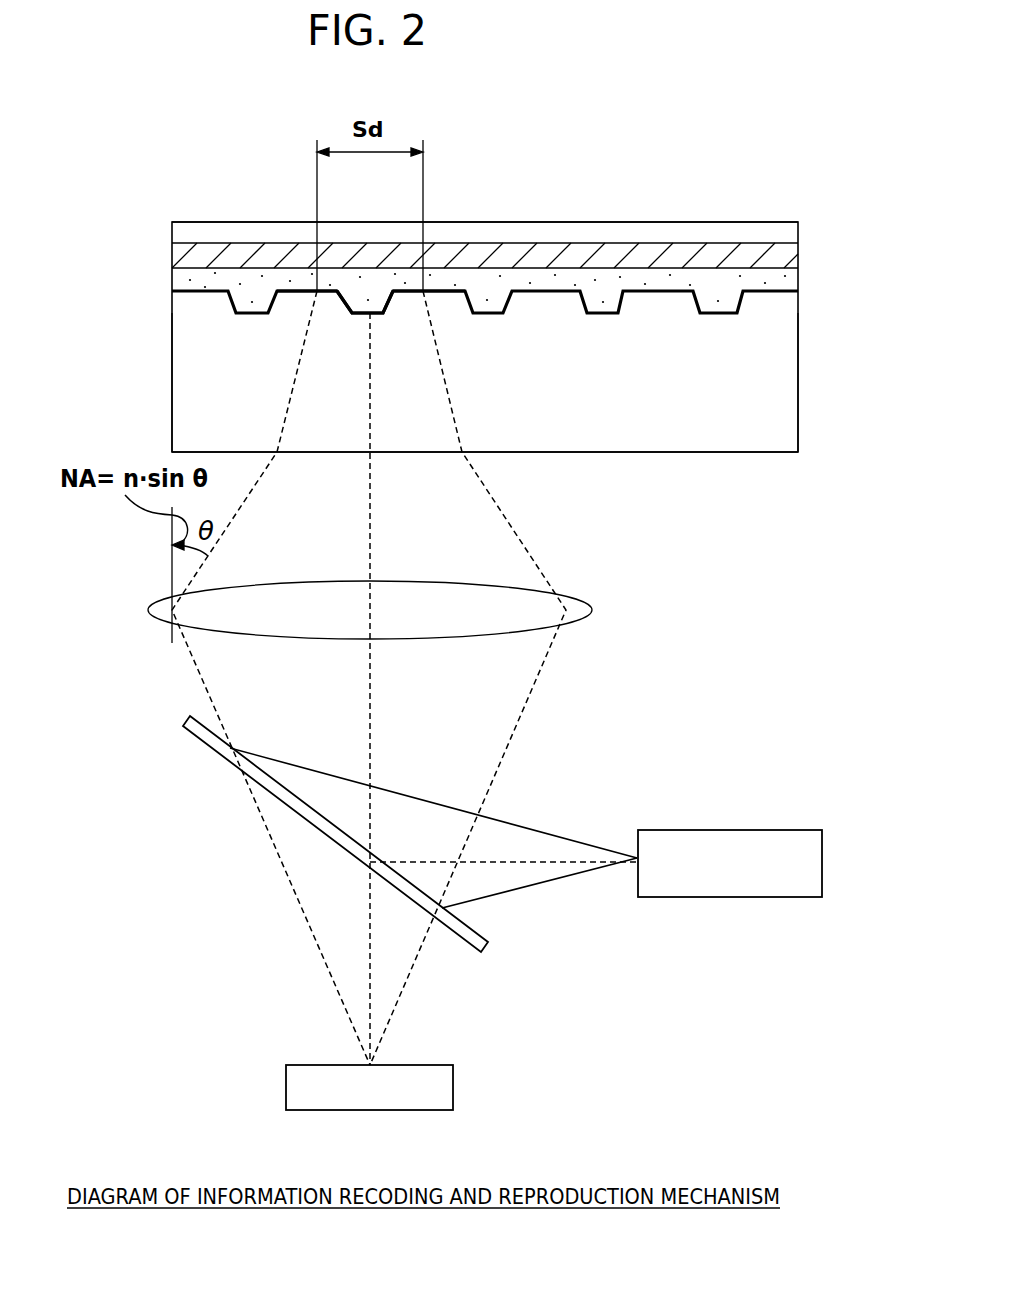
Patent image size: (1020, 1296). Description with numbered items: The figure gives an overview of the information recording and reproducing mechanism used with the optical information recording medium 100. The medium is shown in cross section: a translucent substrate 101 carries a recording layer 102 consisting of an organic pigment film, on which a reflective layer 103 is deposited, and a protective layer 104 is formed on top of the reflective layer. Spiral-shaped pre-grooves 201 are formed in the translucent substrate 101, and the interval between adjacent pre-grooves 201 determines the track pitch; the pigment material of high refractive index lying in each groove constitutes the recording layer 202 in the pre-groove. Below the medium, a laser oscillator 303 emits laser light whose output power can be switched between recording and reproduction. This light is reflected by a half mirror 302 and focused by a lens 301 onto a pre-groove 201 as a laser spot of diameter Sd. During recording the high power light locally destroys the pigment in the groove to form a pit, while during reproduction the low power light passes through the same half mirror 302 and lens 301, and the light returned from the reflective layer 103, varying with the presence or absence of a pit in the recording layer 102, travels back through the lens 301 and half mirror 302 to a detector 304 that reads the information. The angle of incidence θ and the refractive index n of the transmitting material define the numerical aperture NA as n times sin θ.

The optical information recording medium 100 is at (528, 175).
The translucent substrate 101 is at (645, 392).
The recording layer 102 is at (550, 274).
The reflective layer 103 is at (654, 250).
The protective layer 104 is at (718, 230).
The pre-groove 201 is at (375, 315).
The recording layer of high refractive index in the pre-groove 202 is at (335, 294).
The lens 301 is at (400, 582).
The half mirror 302 is at (308, 805).
The laser oscillator 303 is at (720, 830).
The detector 304 is at (403, 1065).